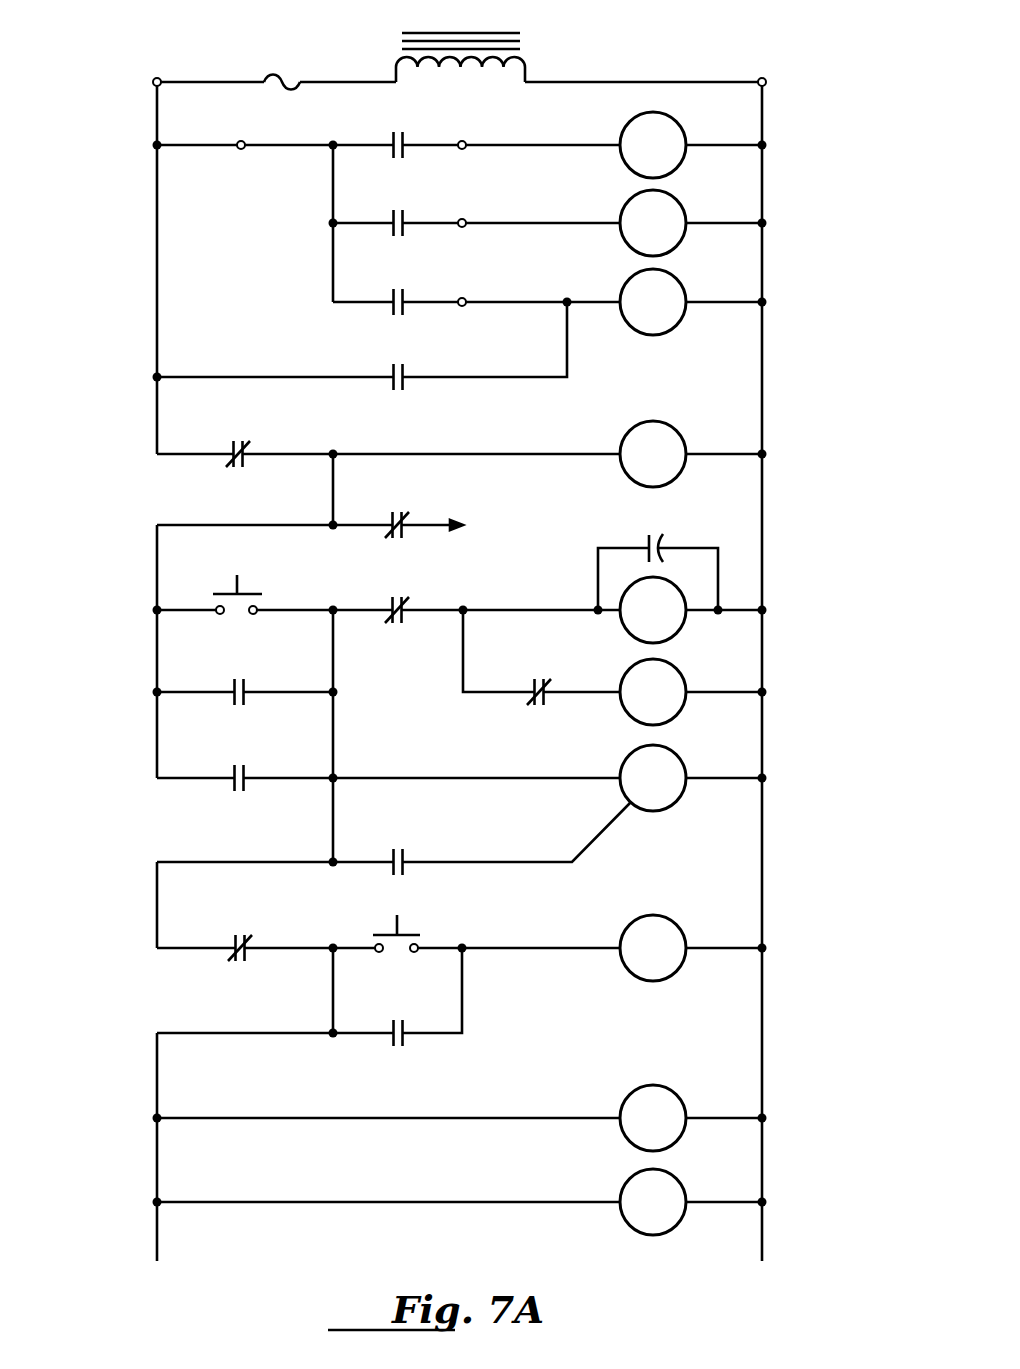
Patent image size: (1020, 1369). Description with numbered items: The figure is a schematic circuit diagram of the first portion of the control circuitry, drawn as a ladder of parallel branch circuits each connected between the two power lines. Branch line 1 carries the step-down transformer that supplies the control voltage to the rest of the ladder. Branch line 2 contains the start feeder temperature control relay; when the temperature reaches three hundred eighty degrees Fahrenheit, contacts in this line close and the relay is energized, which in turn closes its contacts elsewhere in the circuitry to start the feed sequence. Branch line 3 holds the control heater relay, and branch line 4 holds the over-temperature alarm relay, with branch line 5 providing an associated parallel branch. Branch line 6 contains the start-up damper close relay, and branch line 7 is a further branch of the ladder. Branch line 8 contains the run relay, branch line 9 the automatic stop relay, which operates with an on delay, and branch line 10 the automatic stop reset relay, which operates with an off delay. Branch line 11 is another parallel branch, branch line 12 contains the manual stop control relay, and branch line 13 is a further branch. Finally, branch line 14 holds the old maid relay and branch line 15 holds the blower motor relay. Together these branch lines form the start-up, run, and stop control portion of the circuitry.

The branch line 1 is at (440, 53).
The branch line 2 is at (438, 142).
The branch line 3 is at (438, 223).
The branch line 4 is at (438, 299).
The branch line 5 is at (338, 347).
The branch line 6 is at (438, 451).
The branch line 7 is at (335, 497).
The branch line 8 is at (438, 576).
The branch line 9 is at (438, 736).
The branch line 10 is at (438, 774).
The branch line 11 is at (371, 839).
The branch line 12 is at (438, 941).
The branch line 13 is at (285, 998).
The branch line 14 is at (438, 1118).
The branch line 15 is at (438, 1202).